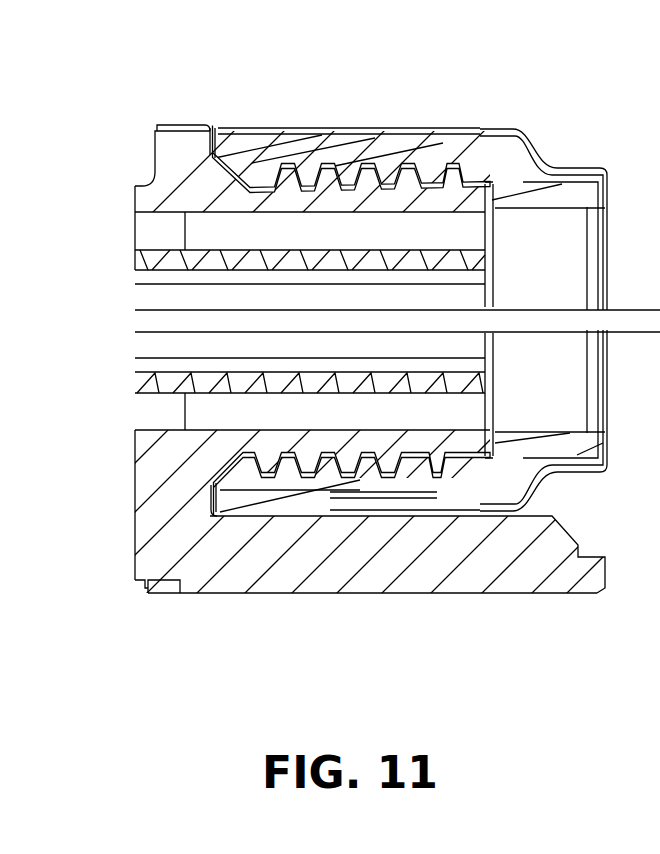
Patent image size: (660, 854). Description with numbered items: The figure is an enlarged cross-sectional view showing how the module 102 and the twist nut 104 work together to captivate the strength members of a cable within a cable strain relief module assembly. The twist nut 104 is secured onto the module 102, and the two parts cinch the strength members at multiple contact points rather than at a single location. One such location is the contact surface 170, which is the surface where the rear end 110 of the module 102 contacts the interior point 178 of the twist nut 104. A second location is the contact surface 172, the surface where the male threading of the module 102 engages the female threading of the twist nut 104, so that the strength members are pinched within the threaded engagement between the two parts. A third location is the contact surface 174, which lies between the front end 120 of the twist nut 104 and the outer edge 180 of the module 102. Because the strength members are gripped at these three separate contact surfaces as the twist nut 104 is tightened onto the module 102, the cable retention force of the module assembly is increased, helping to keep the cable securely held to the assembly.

The module 102 is at (150, 597).
The twist nut 104 is at (588, 474).
The rear end 110 is at (487, 268).
The front end 120 is at (247, 128).
The contact surface 170 is at (494, 172).
The contact surface 172 is at (408, 163).
The contact surface 174 is at (207, 118).
The interior point 178 is at (503, 208).
The outer edge 180 is at (157, 128).